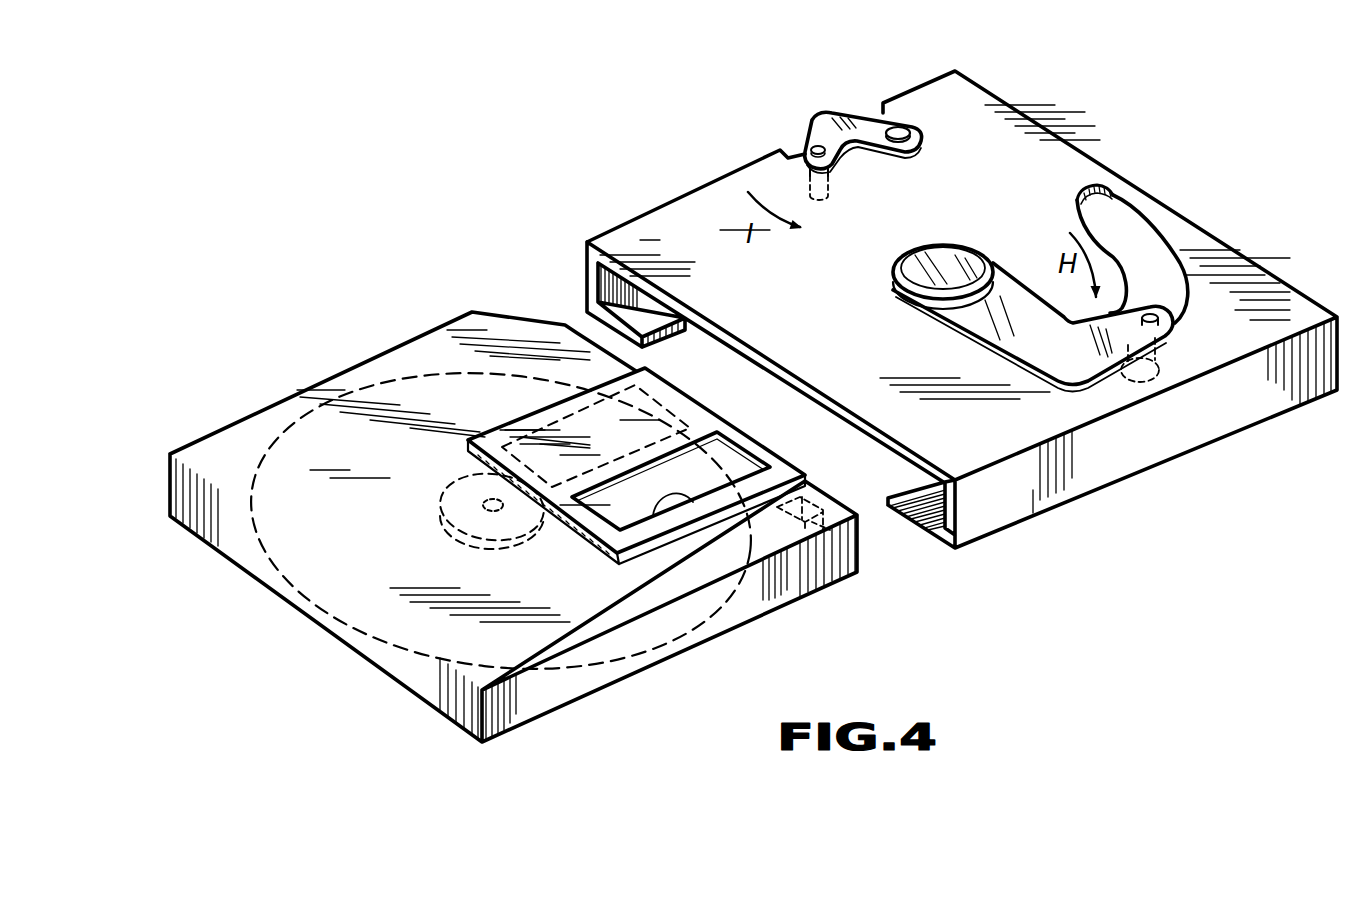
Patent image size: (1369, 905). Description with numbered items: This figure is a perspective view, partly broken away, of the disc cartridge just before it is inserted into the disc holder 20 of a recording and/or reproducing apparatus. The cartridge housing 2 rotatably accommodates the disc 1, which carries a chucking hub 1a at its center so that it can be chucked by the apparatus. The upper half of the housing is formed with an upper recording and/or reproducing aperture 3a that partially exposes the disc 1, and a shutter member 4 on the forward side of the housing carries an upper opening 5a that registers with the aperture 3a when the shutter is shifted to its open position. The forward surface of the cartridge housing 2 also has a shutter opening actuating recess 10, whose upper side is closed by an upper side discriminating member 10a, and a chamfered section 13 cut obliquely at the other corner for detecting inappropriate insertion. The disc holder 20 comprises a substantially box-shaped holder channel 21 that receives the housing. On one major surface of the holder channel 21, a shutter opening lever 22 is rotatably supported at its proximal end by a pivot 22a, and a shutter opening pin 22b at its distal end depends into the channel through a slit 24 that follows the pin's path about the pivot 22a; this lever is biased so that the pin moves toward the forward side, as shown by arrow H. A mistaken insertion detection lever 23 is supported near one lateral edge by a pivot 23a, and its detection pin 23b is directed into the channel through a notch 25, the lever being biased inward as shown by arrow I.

The disc 1 is at (345, 558).
The chucking hub 1a is at (475, 514).
The cartridge housing 2 is at (232, 536).
The upper recording and/or reproducing aperture 3a is at (574, 418).
The shutter member 4 is at (640, 548).
The upper opening 5a is at (693, 502).
The shutter opening actuating recess 10 is at (798, 498).
The upper side discriminating member 10a is at (822, 526).
The chamfered section 13 is at (551, 318).
The disc holder 20 is at (685, 160).
The holder channel 21 is at (1018, 482).
The shutter opening lever 22 is at (1015, 297).
The pivot 22a is at (942, 260).
The shutter opening pin 22b is at (1158, 345).
The mistaken insertion detection lever 23 is at (850, 123).
The pivot 23a is at (904, 127).
The detection pin 23b is at (820, 143).
The slit 24 is at (1162, 258).
The notch 25 is at (790, 157).